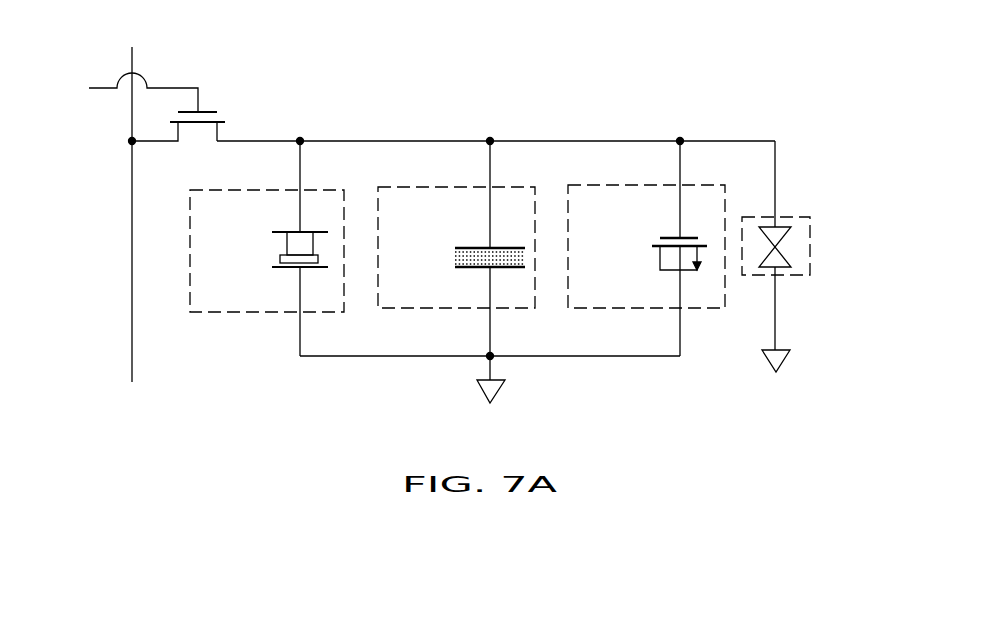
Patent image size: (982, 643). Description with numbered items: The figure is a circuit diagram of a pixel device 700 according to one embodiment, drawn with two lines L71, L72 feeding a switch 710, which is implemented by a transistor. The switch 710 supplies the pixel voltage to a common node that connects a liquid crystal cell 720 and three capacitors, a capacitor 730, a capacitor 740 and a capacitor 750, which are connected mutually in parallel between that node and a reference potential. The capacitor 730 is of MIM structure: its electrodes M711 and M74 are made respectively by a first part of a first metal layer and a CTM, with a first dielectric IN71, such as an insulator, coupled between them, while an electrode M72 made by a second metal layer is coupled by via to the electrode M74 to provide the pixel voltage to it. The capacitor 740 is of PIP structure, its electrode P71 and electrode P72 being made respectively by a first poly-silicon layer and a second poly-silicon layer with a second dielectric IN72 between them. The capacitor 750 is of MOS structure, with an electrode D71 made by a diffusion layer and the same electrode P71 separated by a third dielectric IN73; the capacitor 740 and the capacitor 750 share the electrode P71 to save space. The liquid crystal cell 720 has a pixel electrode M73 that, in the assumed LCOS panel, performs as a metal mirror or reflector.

The pixel device 700 is at (893, 408).
The scan line L71 is at (107, 89).
The data line L72 is at (135, 60).
The switch 710 is at (200, 135).
The liquid crystal cell 720 is at (801, 245).
The capacitor 730 is at (265, 248).
The capacitor 740 is at (536, 248).
The capacitor 750 is at (645, 248).
The electrode M72 is at (288, 235).
The electrode M74 is at (287, 252).
The first dielectric IN71 is at (280, 258).
The electrode M711 is at (292, 268).
The electrode P71 is at (478, 248).
The second dielectric IN72 is at (455, 257).
The electrode P72 is at (478, 268).
The third dielectric IN73 is at (652, 246).
The electrode D71 is at (687, 250).
The pixel electrode M73 is at (783, 227).